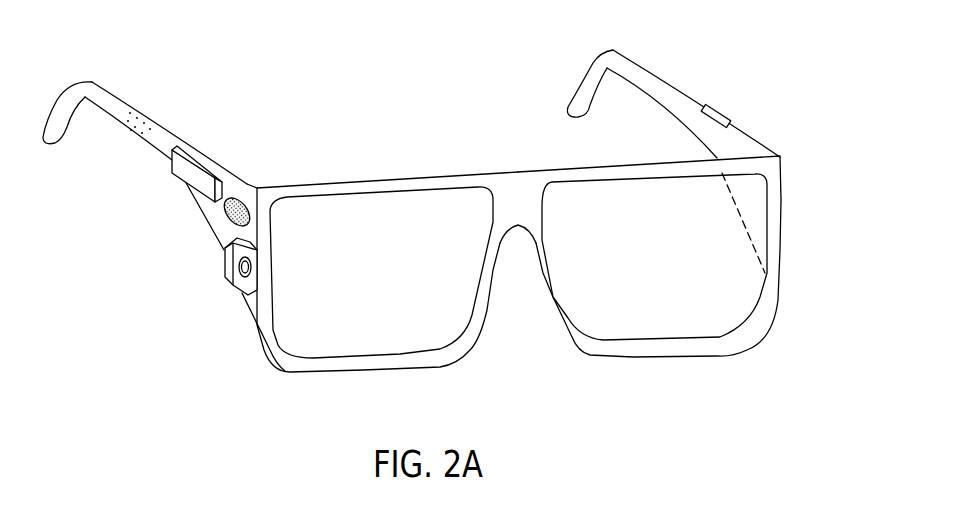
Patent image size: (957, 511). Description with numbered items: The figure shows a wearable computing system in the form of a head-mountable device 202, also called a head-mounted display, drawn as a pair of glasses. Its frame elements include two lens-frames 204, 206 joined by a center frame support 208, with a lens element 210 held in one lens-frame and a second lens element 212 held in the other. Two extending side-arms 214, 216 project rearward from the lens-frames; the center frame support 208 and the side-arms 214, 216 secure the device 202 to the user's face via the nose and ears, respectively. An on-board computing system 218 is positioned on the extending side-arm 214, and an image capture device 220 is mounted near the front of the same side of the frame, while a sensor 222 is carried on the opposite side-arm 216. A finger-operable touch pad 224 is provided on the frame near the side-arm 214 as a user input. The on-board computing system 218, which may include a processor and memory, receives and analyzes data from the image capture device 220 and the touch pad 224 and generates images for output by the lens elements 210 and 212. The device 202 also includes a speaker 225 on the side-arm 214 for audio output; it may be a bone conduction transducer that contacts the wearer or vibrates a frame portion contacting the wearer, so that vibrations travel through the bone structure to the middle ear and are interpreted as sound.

The head-mountable device 202 is at (364, 86).
The lens-frame 204 is at (353, 187).
The lens-frame 206 is at (597, 168).
The center frame support 208 is at (520, 193).
The lens element 210 is at (327, 335).
The lens element 212 is at (672, 322).
The extending side-arm 214 is at (193, 150).
The extending side-arm 216 is at (677, 93).
The on-board computing system 218 is at (188, 172).
The image capture device 220 is at (227, 257).
The sensor 222 is at (720, 113).
The finger-operable touch pad 224 is at (225, 210).
The speaker 225 is at (138, 122).